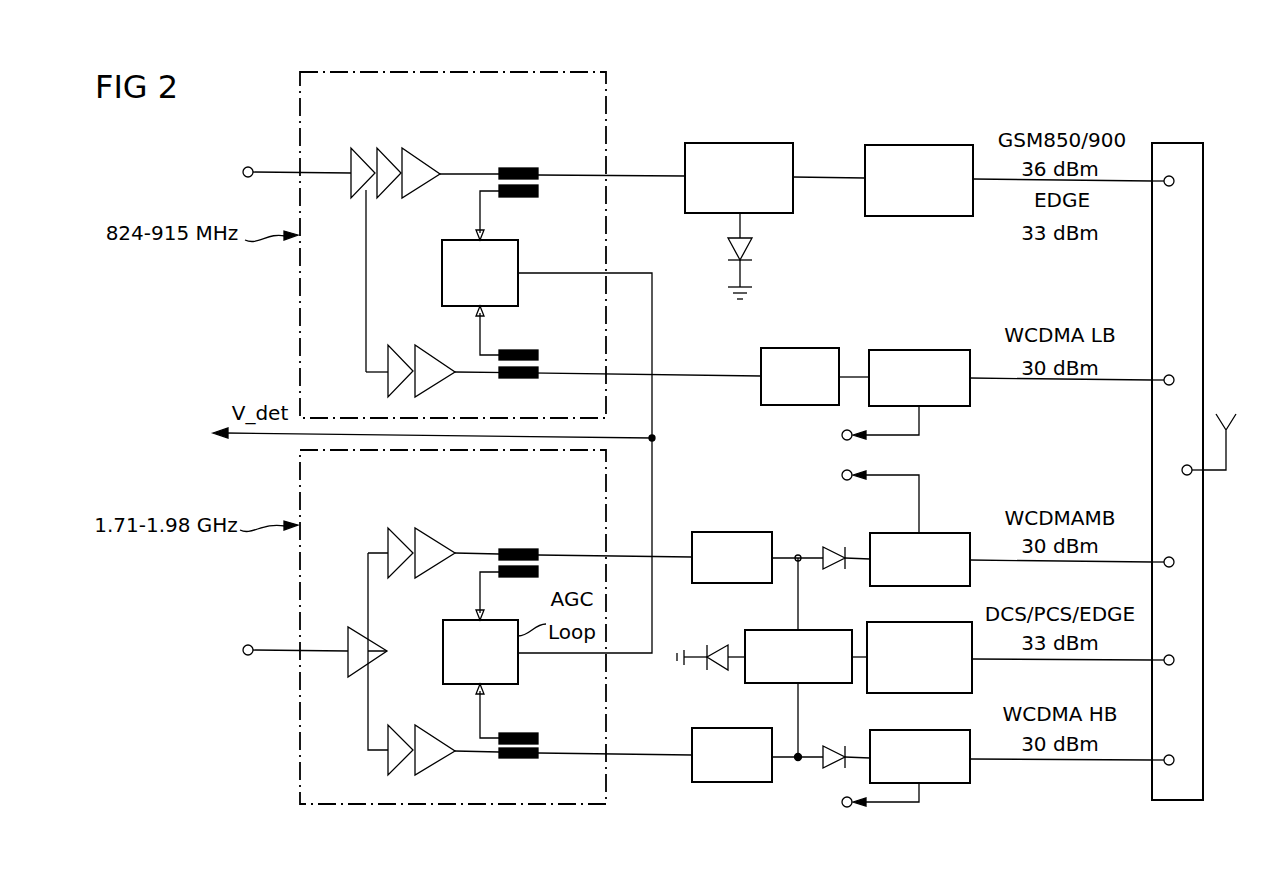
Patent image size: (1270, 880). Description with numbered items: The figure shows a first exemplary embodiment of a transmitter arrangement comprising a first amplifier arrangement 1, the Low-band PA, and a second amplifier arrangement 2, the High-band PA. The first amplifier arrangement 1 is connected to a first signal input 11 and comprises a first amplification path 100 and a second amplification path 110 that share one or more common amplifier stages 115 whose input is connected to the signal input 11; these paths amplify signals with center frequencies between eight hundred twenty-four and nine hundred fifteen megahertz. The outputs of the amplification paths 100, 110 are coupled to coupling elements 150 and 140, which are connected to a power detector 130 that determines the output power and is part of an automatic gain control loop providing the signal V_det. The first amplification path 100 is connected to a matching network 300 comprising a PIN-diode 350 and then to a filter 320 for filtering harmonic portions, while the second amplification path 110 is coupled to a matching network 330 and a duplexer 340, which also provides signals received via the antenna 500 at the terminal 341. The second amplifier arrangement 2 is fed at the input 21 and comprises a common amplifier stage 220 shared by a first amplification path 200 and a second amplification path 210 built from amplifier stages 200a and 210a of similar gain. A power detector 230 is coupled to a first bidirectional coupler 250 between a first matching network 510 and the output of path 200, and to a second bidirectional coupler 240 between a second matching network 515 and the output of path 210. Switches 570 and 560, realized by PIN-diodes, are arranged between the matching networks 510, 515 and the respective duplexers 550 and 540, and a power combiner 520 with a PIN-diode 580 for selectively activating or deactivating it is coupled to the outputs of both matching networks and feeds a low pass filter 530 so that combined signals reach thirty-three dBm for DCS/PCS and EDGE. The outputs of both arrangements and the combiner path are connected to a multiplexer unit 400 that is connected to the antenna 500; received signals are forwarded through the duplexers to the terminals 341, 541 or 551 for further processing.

The first amplifier arrangement 1 is at (612, 125).
The second amplifier arrangement 2 is at (298, 727).
The first signal input 11 is at (249, 166).
The high-band input port 21 is at (249, 644).
The first amplification path 100 is at (419, 154).
The second amplification path 110 is at (431, 350).
The common amplifier stages 115 is at (357, 160).
The power detector 130 is at (442, 272).
The coupling element 140 is at (496, 380).
The coupling element 150 is at (514, 167).
The first amplification path 200 is at (401, 544).
The amplifier stages 200a is at (388, 546).
The second amplification path 210 is at (381, 732).
The amplifier stages 210a is at (388, 758).
The common amplifier stage 220 is at (386, 640).
The power detector 230 is at (518, 672).
The second bidirectional coupler 240 is at (496, 758).
The first bidirectional coupler 250 is at (516, 548).
The matching network 300 is at (740, 143).
The filter 320 is at (920, 145).
The matching network 330 is at (800, 348).
The duplexer 340 is at (921, 350).
The terminal 341 is at (855, 440).
The PIN-diode 350 is at (728, 256).
The multiplexer unit 400 is at (1180, 143).
The antenna 500 is at (1235, 422).
The first matching network 510 is at (724, 532).
The second matching network 515 is at (730, 782).
The power combiner 520 is at (745, 680).
The low pass filter 530 is at (972, 684).
The duplexer 540 is at (944, 783).
The terminal 541 is at (848, 808).
The duplexer 550 is at (946, 533).
The terminal 551 is at (850, 482).
The switch 560 is at (838, 746).
The switch 570 is at (830, 546).
The PIN-diode 580 is at (706, 645).